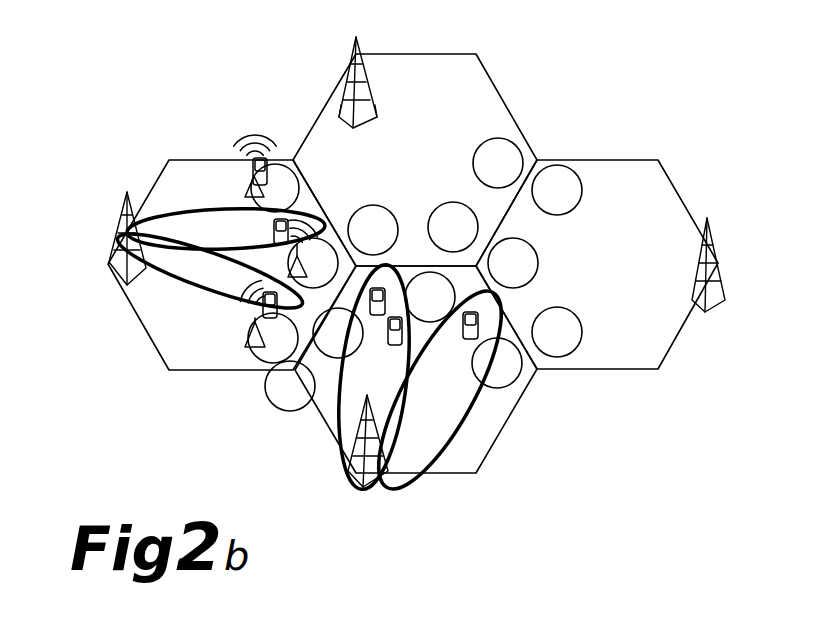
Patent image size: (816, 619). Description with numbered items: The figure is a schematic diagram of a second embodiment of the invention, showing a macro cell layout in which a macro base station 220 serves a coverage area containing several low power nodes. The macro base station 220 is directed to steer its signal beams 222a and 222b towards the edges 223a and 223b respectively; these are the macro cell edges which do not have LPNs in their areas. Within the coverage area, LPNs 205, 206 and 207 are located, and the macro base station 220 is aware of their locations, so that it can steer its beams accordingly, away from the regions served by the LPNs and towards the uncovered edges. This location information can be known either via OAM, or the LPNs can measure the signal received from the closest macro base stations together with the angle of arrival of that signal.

The LPN 205 is at (245, 192).
The LPN 206 is at (290, 270).
The LPN 207 is at (248, 348).
The macro base station 220 is at (120, 238).
The signal beam 222a is at (183, 208).
The signal beam 222b is at (160, 278).
The edge 223a is at (313, 190).
The edge 223b is at (305, 400).